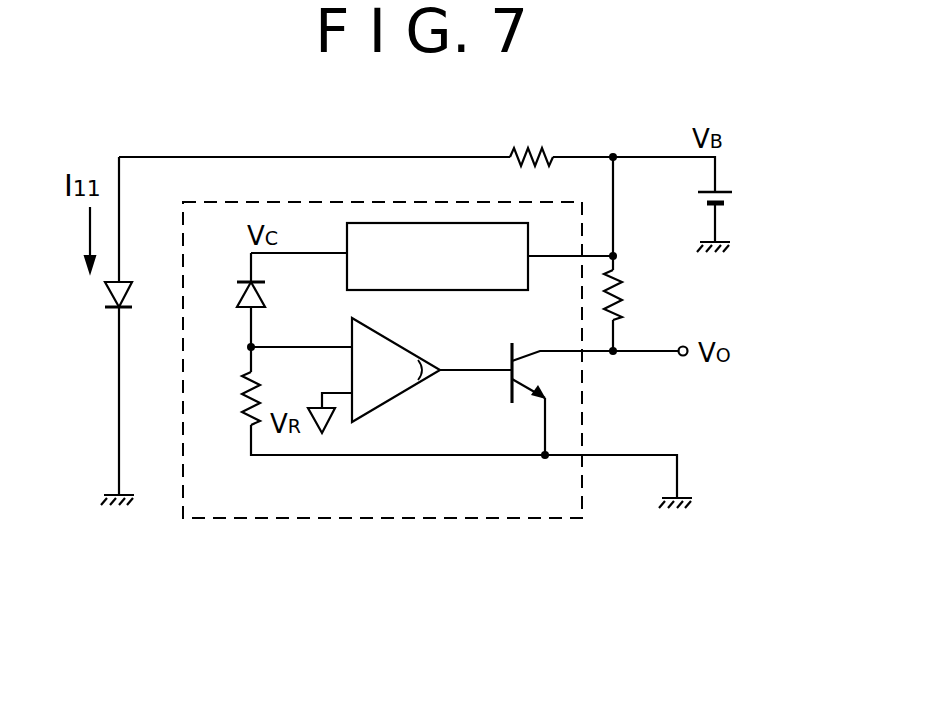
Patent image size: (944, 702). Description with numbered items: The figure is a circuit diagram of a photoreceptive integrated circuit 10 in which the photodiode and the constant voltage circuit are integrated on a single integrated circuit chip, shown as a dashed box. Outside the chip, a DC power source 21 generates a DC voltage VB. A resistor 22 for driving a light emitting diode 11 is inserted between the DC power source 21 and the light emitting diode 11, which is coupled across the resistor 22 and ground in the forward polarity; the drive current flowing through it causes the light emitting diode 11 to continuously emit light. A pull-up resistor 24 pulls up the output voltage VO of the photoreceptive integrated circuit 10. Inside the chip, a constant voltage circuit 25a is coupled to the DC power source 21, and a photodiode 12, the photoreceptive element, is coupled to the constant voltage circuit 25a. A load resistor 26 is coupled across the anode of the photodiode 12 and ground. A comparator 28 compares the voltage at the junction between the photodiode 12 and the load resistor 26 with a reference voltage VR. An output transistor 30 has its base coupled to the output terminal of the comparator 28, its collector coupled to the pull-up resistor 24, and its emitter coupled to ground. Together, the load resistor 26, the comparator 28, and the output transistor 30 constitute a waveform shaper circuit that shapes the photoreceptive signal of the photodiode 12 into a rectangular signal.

The photoreceptive integrated circuit 10 is at (457, 518).
The light emitting diode 11 is at (105, 297).
The photodiode 12 is at (265, 302).
The DC power source 21 is at (745, 199).
The resistor 22 is at (541, 148).
The pull-up resistor 24 is at (625, 306).
The constant voltage circuit 25a is at (417, 223).
The load resistor 26 is at (243, 405).
The comparator 28 is at (410, 348).
The output transistor 30 is at (532, 373).